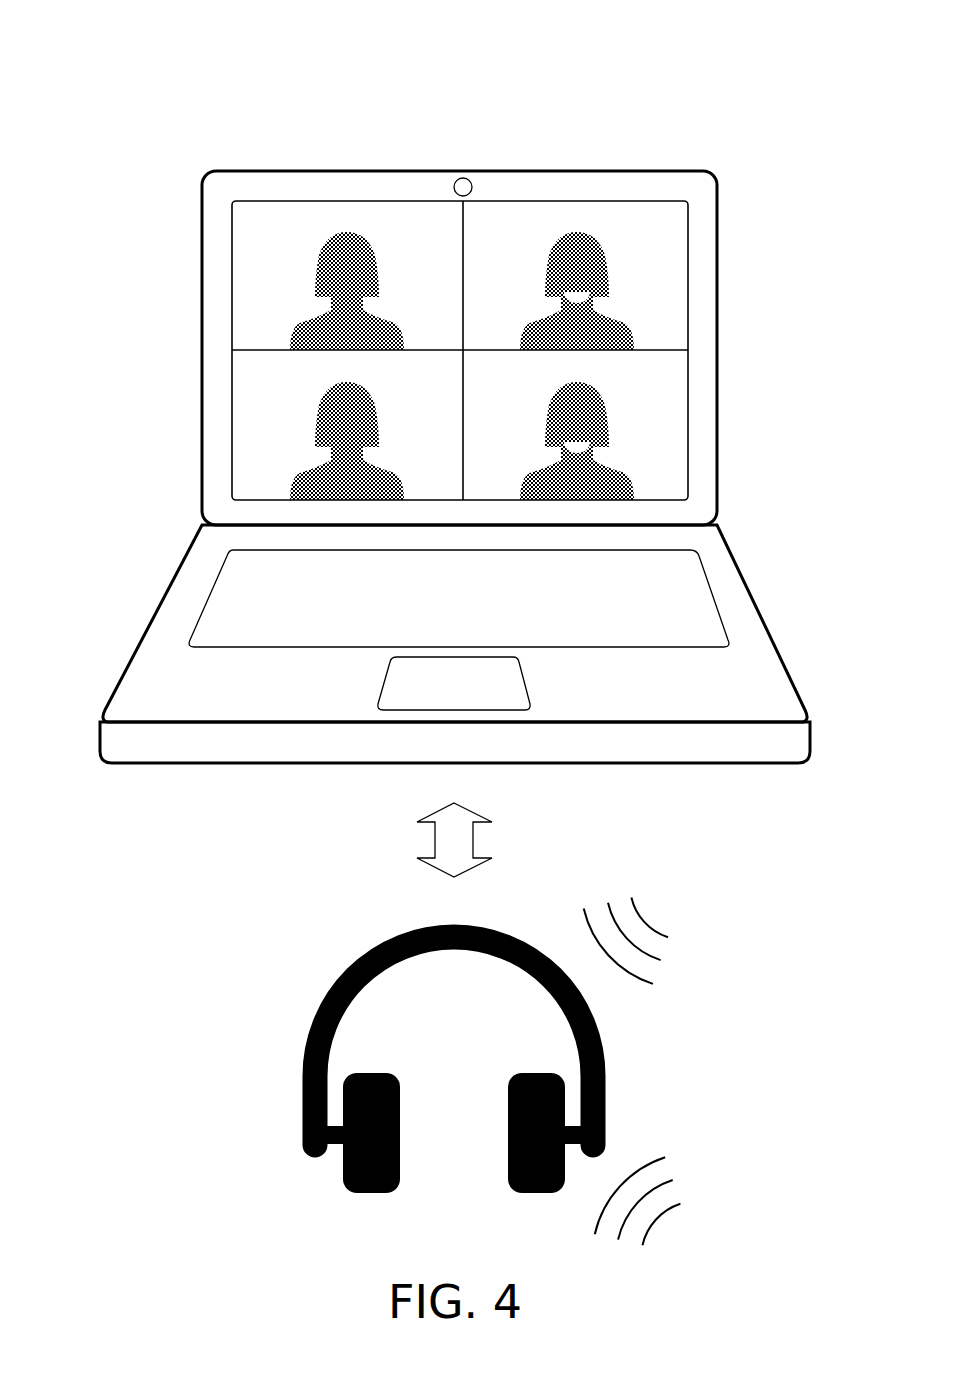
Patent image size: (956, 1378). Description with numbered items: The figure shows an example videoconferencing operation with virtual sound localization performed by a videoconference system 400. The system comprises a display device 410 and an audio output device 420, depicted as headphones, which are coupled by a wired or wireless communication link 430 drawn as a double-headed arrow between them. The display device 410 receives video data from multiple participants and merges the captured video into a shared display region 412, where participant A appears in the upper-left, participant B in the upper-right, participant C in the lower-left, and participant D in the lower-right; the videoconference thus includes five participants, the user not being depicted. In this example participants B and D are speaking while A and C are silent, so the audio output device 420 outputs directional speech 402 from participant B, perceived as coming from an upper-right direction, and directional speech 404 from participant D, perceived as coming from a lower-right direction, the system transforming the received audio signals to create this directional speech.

The videoconference system 400 is at (728, 52).
The display device 410 is at (248, 170).
The display region 412 is at (692, 190).
The audio output device 420 is at (362, 955).
The communication link 430 is at (473, 837).
The directional speech 402 is at (688, 921).
The directional speech 404 is at (702, 1223).